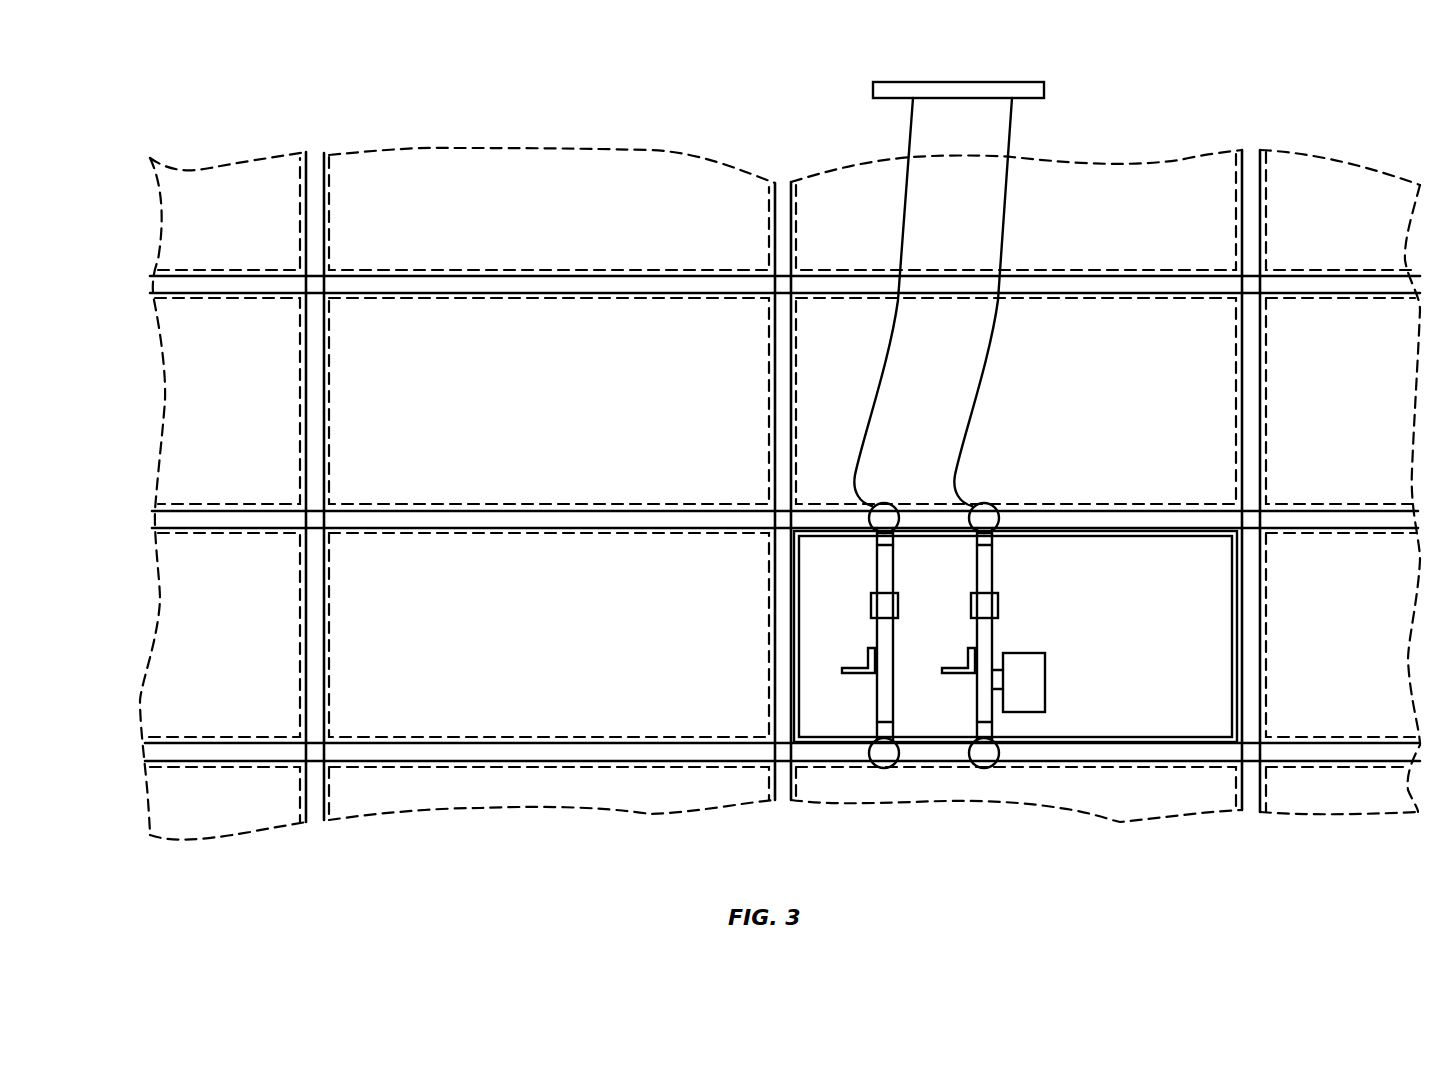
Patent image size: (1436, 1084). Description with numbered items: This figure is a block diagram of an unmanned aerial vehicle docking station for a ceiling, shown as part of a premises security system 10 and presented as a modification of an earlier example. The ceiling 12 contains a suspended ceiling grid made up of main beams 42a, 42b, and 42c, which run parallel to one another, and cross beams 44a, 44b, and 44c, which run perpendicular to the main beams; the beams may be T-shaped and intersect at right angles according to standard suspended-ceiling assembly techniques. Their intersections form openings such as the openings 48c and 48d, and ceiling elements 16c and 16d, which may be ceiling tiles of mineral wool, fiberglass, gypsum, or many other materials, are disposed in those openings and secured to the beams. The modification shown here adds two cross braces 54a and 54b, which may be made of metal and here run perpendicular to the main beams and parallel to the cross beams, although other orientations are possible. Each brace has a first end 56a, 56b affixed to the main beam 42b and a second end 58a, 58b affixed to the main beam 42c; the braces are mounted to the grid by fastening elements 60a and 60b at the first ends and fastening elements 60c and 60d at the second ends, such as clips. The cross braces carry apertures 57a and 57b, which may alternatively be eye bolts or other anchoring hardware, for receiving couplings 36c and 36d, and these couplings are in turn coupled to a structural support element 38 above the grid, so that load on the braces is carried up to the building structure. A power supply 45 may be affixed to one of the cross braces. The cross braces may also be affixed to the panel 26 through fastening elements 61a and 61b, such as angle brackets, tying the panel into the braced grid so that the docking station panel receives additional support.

The premises security system 10 is at (1253, 118).
The ceiling 12 is at (545, 150).
The ceiling element 16c is at (485, 738).
The ceiling element 16d is at (1120, 742).
The panel 26 is at (1200, 585).
The coupling 36c is at (913, 130).
The coupling 36d is at (1012, 130).
The structural support element 38 is at (873, 92).
The main beam 42a is at (160, 285).
The main beam 42b is at (160, 520).
The main beam 42c is at (158, 752).
The cross beam 44a is at (313, 352).
The cross beam 44b is at (782, 352).
The cross beam 44c is at (1250, 352).
The power supply 45 is at (1040, 695).
The opening 48c is at (568, 738).
The opening 48d is at (1207, 742).
The cross brace 54a is at (885, 704).
The cross brace 54b is at (978, 707).
The first end 56a is at (877, 547).
The first end 56b is at (993, 547).
The aperture 57a is at (882, 608).
The aperture 57b is at (988, 608).
The second end 58a is at (878, 720).
The second end 58b is at (992, 720).
The fastening element 60a is at (880, 503).
The fastening element 60b is at (990, 503).
The fastening element 60c is at (869, 762).
The fastening element 60d is at (996, 762).
The fastening element 61a is at (870, 655).
The fastening element 61b is at (952, 665).